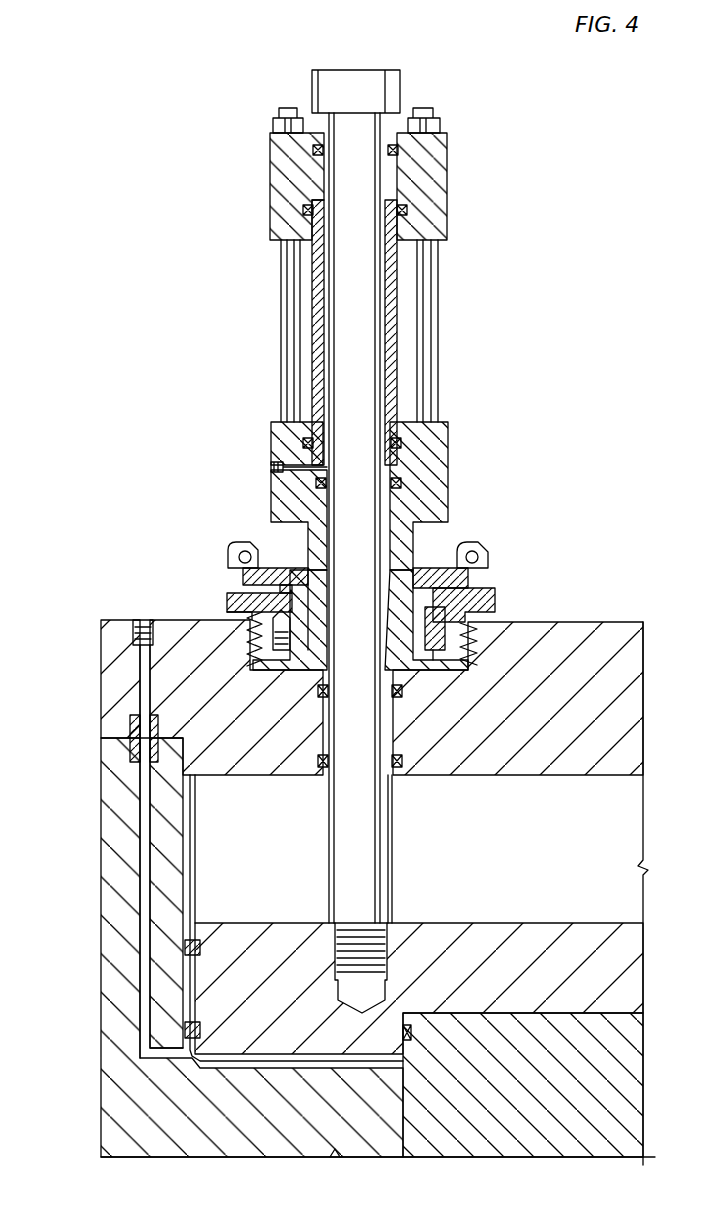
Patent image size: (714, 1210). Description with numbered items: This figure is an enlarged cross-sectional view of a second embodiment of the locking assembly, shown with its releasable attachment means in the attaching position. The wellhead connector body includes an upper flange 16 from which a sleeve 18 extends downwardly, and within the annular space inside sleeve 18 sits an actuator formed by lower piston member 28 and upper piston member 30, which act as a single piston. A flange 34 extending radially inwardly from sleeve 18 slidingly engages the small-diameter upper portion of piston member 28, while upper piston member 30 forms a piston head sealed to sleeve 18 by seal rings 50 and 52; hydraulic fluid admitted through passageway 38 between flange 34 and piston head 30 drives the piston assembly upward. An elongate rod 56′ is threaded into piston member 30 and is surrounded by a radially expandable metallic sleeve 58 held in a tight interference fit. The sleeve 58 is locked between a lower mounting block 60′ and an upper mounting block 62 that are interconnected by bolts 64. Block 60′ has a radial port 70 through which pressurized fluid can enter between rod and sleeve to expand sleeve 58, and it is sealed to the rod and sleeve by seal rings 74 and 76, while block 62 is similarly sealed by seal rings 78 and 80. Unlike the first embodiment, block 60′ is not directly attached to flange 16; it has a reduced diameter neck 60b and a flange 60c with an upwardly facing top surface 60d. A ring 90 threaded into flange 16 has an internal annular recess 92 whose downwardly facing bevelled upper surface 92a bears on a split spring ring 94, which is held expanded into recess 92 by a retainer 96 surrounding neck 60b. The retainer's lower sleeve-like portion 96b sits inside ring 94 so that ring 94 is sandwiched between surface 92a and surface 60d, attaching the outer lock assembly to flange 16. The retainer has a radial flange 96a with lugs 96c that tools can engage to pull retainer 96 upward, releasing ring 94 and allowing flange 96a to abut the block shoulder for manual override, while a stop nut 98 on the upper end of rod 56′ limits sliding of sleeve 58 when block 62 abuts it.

The upper flange 16 is at (268, 765).
The sleeve 18 is at (102, 808).
The lower piston member 28 is at (595, 1080).
The upper piston member 30 is at (500, 923).
The flange 34 is at (265, 1108).
The passageway 38 is at (140, 865).
The seal ring 50 is at (185, 947).
The seal ring 52 is at (185, 1030).
The rod 56′ is at (345, 870).
The sleeve 58 is at (393, 340).
The lower mounting block 60′ is at (460, 443).
The reduced diameter neck 60b is at (308, 530).
The flange 60c is at (290, 680).
The top surface 60d is at (405, 665).
The upper mounting block 62 is at (432, 175).
The bolts 64 is at (283, 278).
The radial port 70 is at (275, 466).
The seal ring 74 is at (403, 483).
The seal ring 76 is at (303, 440).
The seal ring 78 is at (313, 150).
The seal ring 80 is at (407, 215).
The ring 90 is at (470, 660).
The internal annular recess 92 is at (445, 632).
The upper surface of recess 92a is at (442, 610).
The split spring ring 94 is at (275, 645).
The retainer 96 is at (439, 564).
The radial flange 96a is at (245, 578).
The lower sleeve-like portion 96b is at (292, 610).
The lugs 96c is at (228, 553).
The stop nut 98 is at (365, 75).